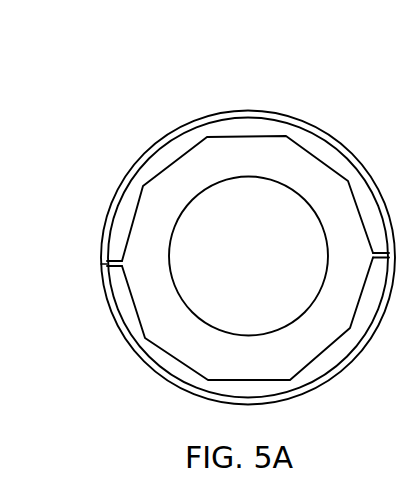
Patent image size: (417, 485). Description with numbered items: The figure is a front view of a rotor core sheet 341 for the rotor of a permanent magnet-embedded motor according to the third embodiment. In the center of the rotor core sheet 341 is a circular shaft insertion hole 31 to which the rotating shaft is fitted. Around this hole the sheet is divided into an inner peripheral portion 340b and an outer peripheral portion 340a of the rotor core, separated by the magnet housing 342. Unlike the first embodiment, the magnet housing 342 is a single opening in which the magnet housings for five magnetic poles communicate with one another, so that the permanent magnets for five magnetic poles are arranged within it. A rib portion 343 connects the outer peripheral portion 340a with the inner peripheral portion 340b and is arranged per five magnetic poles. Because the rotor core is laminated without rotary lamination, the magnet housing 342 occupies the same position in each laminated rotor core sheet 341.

The rotor core sheet 341 is at (128, 44).
The magnet housing 342 is at (176, 142).
The outer peripheral portion of the rotor core 340a is at (110, 305).
The inner peripheral portion of the rotor core 340b is at (148, 214).
The rib portion 343 is at (106, 263).
The shaft insertion hole 31 is at (290, 305).